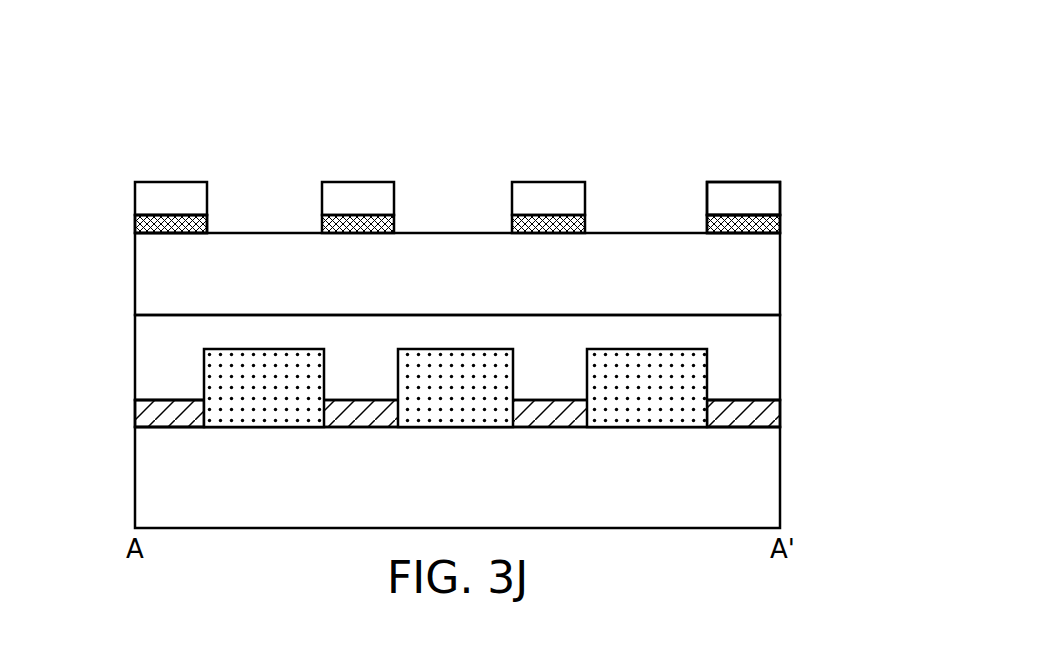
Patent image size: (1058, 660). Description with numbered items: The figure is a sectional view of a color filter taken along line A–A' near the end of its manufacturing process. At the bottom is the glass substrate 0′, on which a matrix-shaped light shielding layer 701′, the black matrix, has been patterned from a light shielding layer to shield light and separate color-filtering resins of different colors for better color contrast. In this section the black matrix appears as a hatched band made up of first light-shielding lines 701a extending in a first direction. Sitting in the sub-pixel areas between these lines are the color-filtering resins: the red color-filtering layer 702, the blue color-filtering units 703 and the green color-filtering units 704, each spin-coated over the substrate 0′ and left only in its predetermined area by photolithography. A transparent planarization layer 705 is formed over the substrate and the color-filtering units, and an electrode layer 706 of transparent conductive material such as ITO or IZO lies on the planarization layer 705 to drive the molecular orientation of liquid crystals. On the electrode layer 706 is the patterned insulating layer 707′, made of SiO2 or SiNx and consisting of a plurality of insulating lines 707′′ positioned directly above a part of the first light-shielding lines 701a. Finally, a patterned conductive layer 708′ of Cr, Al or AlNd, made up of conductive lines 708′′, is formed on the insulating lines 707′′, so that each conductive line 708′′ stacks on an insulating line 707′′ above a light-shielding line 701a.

The glass substrate 0′ is at (745, 505).
The matrix-shaped light shielding layer 701′ is at (800, 421).
The first light-shielding lines 701a is at (162, 412).
The red color-filtering layer 702 is at (263, 370).
The blue color-filtering units 703 is at (450, 370).
The green color-filtering units 704 is at (641, 370).
The transparent planarization layer 705 is at (743, 340).
The electrode layer 706 is at (738, 302).
The patterned insulating layer 707′ is at (800, 228).
The insulating lines 707′′ is at (136, 224).
The patterned conductive layer 708′ is at (800, 193).
The conductive lines 708′′ is at (180, 203).